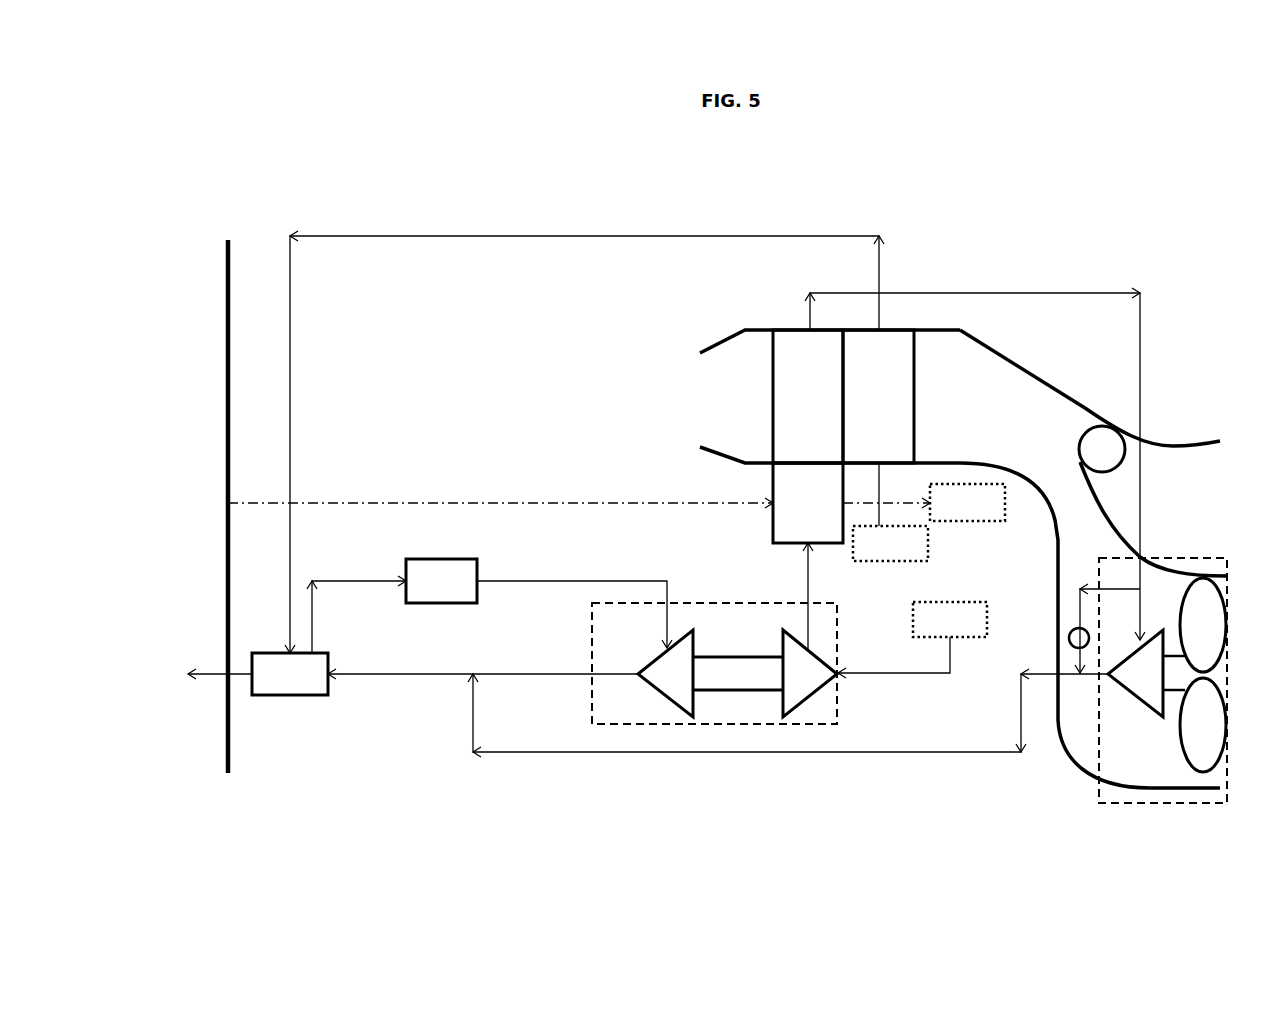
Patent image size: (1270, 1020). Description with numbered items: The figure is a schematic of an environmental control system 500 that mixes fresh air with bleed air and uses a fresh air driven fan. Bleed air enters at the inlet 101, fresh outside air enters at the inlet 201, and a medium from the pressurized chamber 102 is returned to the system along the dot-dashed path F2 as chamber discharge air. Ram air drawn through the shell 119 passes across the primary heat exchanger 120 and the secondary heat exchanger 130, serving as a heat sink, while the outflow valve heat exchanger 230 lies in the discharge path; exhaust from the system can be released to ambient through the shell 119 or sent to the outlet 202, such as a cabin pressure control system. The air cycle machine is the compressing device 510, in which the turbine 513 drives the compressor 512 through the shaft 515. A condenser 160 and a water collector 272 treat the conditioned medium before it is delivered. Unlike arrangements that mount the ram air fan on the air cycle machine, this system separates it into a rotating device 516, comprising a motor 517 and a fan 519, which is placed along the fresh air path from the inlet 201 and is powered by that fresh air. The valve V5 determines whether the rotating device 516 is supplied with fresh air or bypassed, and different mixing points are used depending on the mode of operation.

The environmental control system 500 is at (1160, 151).
The chamber 102 is at (225, 240).
The shell 119 is at (1065, 392).
The secondary heat exchanger 130 is at (808, 396).
The primary heat exchanger 120 is at (878, 396).
The outflow valve heat exchanger 230 is at (808, 503).
The outlet 202 is at (967, 502).
The inlet 101 is at (890, 543).
The inlet 201 is at (912, 640).
The water collector 272 is at (441, 581).
The condenser 160 is at (290, 674).
The path for the medium F2 is at (438, 502).
The compressing device 510 is at (588, 695).
The turbine 513 is at (665, 673).
The compressor 512 is at (810, 673).
The shaft 515 is at (720, 655).
The valve V5 is at (1070, 628).
The rotating device 516 is at (1099, 792).
The motor 517 is at (1146, 673).
The fan 519 is at (1187, 577).